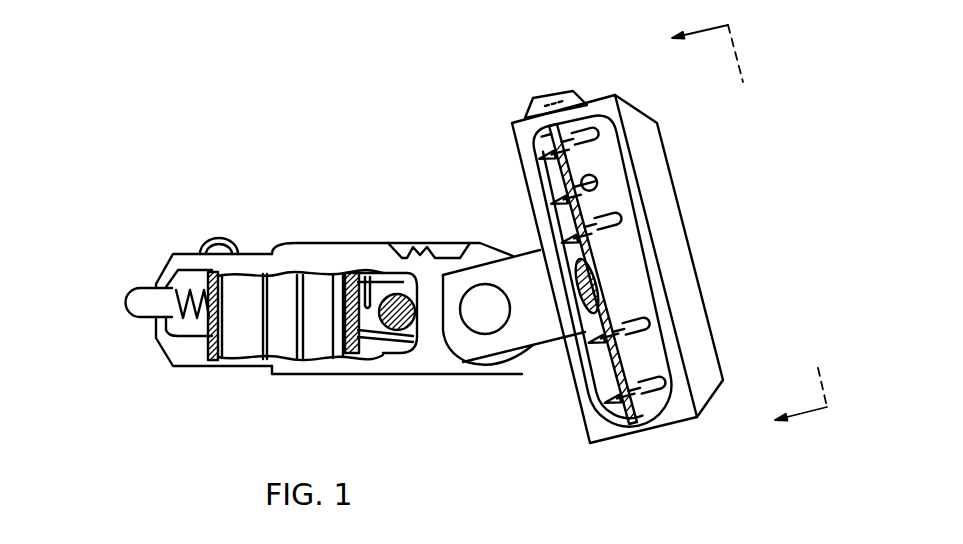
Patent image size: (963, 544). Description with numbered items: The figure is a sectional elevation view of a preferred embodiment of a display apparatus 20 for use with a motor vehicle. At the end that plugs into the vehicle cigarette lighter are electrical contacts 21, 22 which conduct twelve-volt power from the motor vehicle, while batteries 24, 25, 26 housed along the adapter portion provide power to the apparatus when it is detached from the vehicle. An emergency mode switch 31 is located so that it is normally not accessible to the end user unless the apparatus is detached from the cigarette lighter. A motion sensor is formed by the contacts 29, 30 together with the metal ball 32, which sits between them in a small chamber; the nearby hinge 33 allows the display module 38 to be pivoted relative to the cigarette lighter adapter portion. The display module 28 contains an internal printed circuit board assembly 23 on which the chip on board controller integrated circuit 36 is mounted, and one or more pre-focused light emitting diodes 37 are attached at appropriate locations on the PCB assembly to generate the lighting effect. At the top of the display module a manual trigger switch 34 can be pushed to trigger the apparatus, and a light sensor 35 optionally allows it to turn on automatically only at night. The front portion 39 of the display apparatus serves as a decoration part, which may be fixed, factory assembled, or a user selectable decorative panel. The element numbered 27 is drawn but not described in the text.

The display apparatus 20 is at (722, 241).
The electrical contact 21 is at (133, 298).
The electrical contact 22 is at (217, 240).
The printed circuit board assembly 23 is at (605, 425).
The battery 24 is at (240, 353).
The battery 25 is at (273, 350).
The battery 26 is at (322, 347).
The spring barrel 27 is at (222, 373).
The display module 28 is at (343, 272).
The contact 29 is at (383, 342).
The contact 30 is at (371, 278).
The emergency mode switch 31 is at (423, 248).
The metal ball 32 is at (410, 317).
The hinge 33 is at (488, 320).
The manual trigger switch 34 is at (557, 91).
The light sensor 35 is at (527, 102).
The chip on board controller integrated circuit 36 is at (575, 350).
The pre-focused light emitting diodes 37 is at (574, 142).
The display module 38 is at (662, 420).
The front portion 39 is at (703, 370).